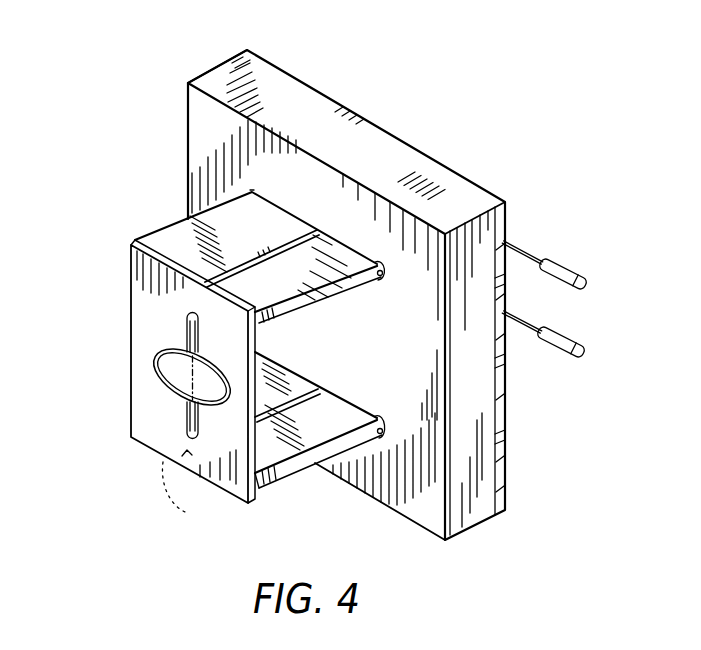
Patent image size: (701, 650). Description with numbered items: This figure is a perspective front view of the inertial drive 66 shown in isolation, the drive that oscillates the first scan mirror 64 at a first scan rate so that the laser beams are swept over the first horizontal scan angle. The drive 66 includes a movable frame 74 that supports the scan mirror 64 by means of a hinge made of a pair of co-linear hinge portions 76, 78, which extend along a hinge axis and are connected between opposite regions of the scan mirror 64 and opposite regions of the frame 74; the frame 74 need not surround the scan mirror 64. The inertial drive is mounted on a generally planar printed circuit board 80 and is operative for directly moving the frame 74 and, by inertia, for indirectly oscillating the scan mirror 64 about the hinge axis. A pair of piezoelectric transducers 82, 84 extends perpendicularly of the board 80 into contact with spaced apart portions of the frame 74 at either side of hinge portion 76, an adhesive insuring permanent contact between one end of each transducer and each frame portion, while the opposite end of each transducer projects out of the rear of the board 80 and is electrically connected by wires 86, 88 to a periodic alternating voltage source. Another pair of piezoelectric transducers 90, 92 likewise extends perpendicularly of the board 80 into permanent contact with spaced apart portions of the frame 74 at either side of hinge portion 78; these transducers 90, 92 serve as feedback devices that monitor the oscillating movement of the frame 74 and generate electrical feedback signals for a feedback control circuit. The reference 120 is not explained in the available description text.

The inertial drive 66 is at (185, 50).
The printed circuit board 80 is at (400, 140).
The movable frame 74 is at (145, 300).
The hinge portion 76 is at (187, 336).
The hinge portion 78 is at (198, 427).
The first scan mirror 64 is at (178, 378).
The light path 120 is at (195, 495).
The piezoelectric transducer 82 is at (185, 242).
The piezoelectric transducer 84 is at (293, 287).
The piezoelectric transducer 90 is at (292, 388).
The piezoelectric transducer 92 is at (283, 460).
The wire 86 is at (563, 266).
The wire 88 is at (562, 348).